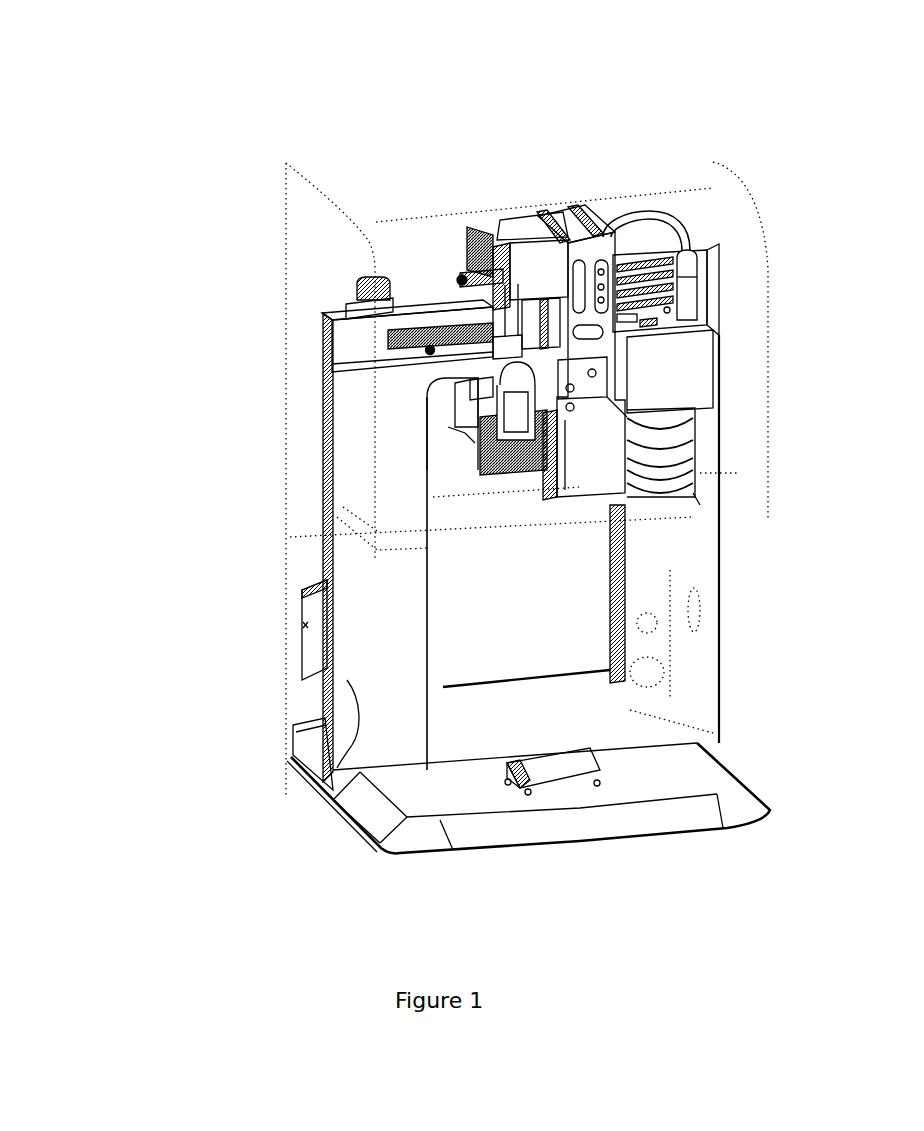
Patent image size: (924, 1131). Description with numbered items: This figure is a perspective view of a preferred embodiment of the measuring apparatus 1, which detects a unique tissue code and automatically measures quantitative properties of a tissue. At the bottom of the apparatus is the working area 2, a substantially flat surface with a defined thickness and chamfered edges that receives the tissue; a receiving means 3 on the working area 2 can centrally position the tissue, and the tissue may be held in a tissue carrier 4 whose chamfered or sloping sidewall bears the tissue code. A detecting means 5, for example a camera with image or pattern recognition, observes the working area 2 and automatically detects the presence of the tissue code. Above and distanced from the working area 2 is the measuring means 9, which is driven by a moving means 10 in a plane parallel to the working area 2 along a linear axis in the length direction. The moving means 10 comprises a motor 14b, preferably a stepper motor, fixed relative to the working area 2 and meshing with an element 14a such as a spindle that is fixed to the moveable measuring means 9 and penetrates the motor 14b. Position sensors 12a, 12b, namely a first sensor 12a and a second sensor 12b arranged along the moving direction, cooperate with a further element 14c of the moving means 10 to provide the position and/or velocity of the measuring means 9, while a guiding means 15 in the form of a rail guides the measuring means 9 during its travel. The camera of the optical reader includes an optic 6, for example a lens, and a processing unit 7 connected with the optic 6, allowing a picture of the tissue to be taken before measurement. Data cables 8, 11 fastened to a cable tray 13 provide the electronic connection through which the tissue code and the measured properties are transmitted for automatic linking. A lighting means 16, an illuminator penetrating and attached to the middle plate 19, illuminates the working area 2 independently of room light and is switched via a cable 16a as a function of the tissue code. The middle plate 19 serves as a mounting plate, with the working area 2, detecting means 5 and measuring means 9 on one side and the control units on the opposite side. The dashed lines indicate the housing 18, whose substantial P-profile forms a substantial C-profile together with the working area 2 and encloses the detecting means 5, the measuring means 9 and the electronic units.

The measuring apparatus 1 is at (138, 113).
The working area 2 is at (630, 780).
The receiving means 3 is at (453, 783).
The tissue carrier 4 is at (570, 783).
The detecting means 5 is at (689, 503).
The optic 6 is at (700, 448).
The processing unit 7 is at (718, 370).
The data cable 8 is at (663, 217).
The measuring means 9 is at (552, 505).
The moving means 10 is at (517, 230).
The data cable 11 is at (467, 250).
The first sensor 12a is at (357, 290).
The second sensor 12b is at (460, 290).
The cable tray 13 is at (563, 210).
The element 14a is at (465, 296).
The motor 14b is at (527, 232).
The element of the moving means 14c is at (468, 228).
The guiding means 15 is at (420, 372).
The lighting means 16 is at (448, 427).
The cable 16a is at (445, 398).
The housing 18 is at (290, 630).
The middle plate 19 is at (333, 767).